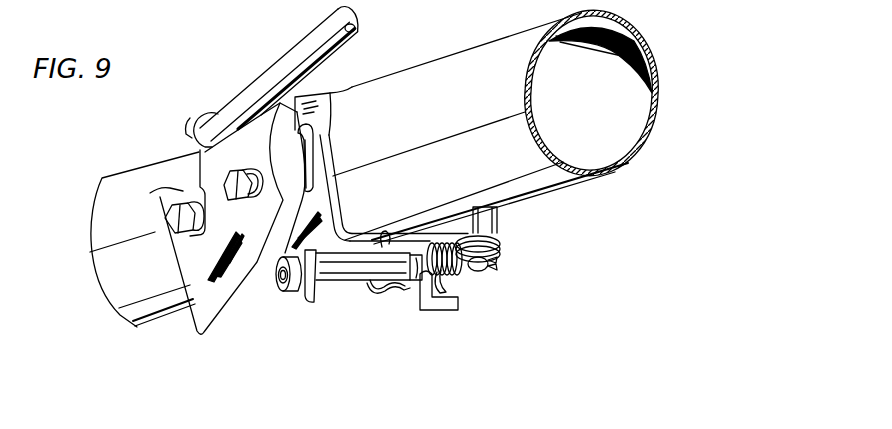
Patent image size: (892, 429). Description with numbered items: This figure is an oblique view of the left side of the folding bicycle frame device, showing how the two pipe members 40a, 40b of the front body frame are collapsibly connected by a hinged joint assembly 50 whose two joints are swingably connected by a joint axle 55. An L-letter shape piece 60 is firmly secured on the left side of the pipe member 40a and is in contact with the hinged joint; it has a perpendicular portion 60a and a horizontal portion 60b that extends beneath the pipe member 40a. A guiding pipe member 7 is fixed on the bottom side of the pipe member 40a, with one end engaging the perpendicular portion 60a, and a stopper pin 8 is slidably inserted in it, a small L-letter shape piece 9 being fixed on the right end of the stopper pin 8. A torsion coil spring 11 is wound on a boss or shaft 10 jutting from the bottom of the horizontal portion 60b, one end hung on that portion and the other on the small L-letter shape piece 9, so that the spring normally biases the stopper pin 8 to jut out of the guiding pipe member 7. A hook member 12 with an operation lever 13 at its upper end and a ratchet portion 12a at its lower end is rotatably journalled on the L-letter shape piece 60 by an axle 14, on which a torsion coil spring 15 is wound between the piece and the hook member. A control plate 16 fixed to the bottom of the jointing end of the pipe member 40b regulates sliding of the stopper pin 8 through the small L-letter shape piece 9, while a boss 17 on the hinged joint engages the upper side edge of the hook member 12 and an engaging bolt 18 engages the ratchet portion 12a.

The guiding pipe member 7 is at (347, 282).
The stopper pin 8 is at (283, 291).
The small L-letter shape piece 9 is at (442, 312).
The boss or shaft 10 is at (445, 276).
The torsion coil spring 11 is at (452, 232).
The hook member 12 is at (204, 310).
The ratchet portion 12a is at (162, 189).
The operation lever 13 is at (290, 62).
The axle 14 is at (232, 170).
The torsion coil spring 15 is at (322, 126).
The control plate 16 is at (397, 296).
The boss 17 is at (192, 116).
The engaging bolt 18 is at (182, 221).
The pipe member 40a is at (484, 60).
The pipe member 40b is at (130, 185).
The hinged joint assembly 50 is at (330, 92).
The joint axle 55 is at (482, 271).
The L-letter shape piece 60 is at (318, 203).
The perpendicular portion 60a is at (303, 296).
The horizontal portion 60b is at (366, 235).